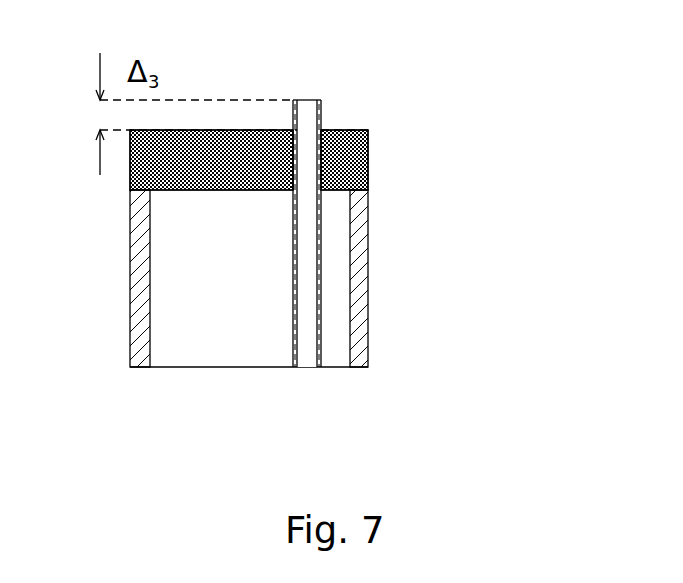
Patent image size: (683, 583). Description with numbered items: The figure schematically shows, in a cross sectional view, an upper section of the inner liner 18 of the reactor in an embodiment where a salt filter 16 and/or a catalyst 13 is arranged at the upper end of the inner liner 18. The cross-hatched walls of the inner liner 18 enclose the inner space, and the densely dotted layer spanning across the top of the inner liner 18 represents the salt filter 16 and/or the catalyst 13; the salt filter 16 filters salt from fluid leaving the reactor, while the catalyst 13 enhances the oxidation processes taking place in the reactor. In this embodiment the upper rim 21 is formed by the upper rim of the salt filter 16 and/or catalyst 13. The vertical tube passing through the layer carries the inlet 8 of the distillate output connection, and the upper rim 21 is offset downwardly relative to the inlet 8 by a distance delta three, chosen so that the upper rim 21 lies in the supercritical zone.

The inlet of the distillate output connection 8 is at (312, 100).
The inner liner 18 is at (122, 228).
The upper rim 21 is at (361, 130).
The catalyst 13 is at (370, 168).
The salt filter 16 is at (370, 168).